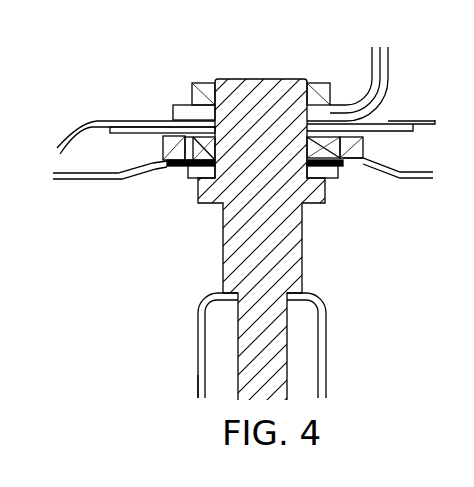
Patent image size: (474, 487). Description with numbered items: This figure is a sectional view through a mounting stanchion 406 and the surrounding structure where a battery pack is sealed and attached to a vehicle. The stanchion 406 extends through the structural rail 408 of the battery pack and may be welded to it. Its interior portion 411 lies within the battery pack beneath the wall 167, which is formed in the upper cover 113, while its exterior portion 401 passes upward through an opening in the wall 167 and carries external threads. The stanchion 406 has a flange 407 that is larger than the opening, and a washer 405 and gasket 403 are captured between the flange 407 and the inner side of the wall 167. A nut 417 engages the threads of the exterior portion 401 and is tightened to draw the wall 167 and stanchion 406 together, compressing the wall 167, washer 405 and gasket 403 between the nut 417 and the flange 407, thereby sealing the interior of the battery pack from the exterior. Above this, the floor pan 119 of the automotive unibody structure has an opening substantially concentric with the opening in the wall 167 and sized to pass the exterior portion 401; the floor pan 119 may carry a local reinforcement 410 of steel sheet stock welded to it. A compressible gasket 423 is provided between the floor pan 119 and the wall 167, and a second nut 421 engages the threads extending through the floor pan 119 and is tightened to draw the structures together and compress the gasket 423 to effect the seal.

The upper cover 113 is at (103, 232).
The floor pan 119 is at (74, 126).
The wall 167 is at (92, 178).
The exterior portion 401 is at (282, 137).
The gasket 403 is at (155, 172).
The washer 405 is at (188, 178).
The stanchion 406 is at (237, 321).
The flange 407 is at (318, 205).
The structural rail 408 is at (198, 375).
The local reinforcement 410 is at (142, 133).
The interior portion 411 is at (333, 277).
The nut 417 is at (343, 153).
The nut 421 is at (196, 83).
The gasket 423 is at (358, 137).